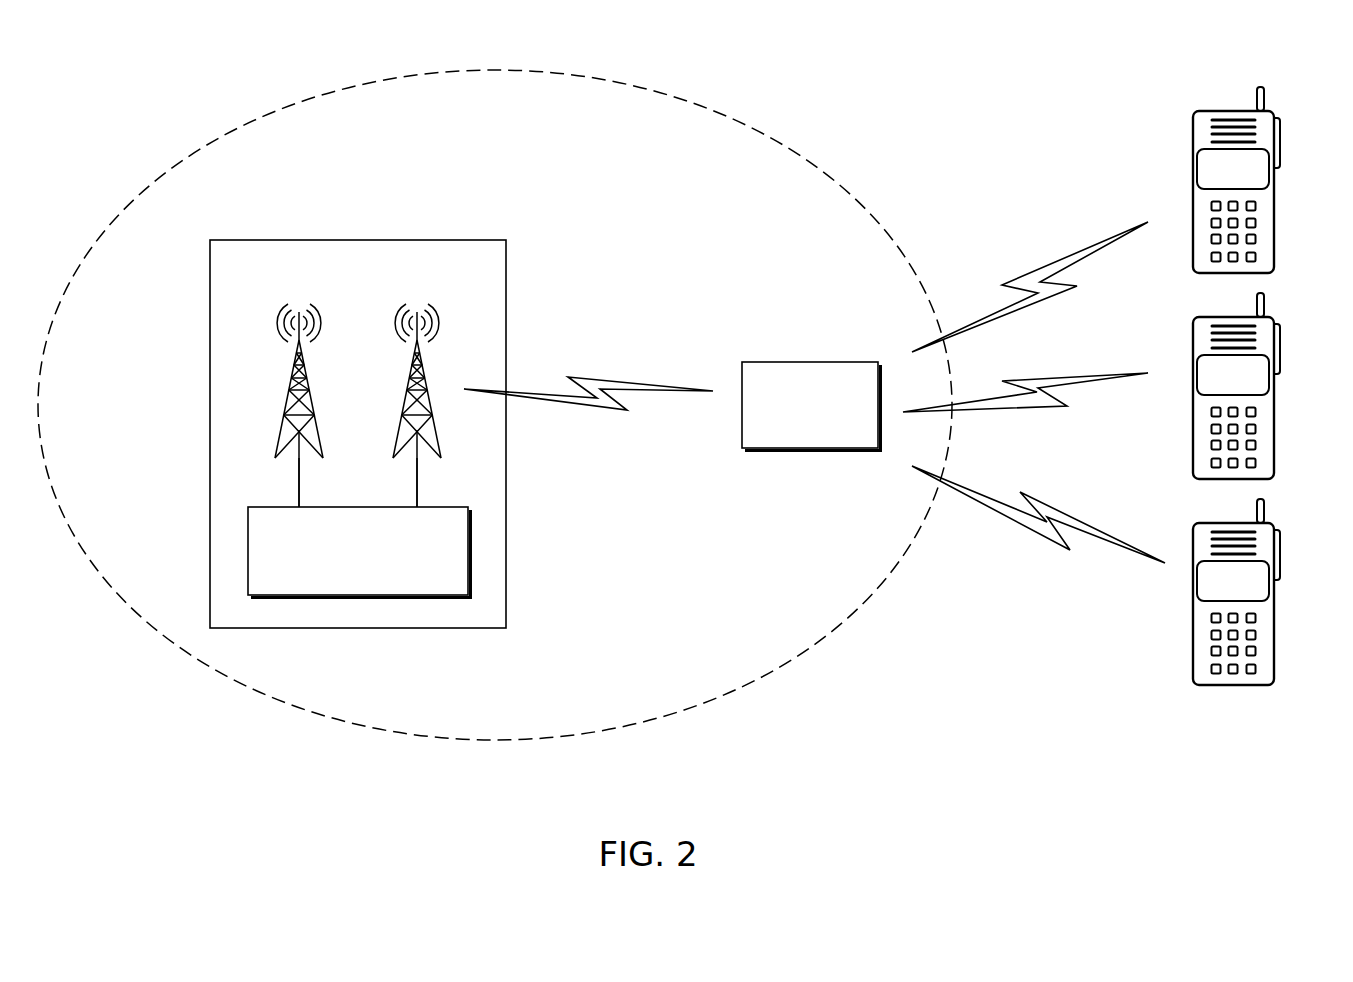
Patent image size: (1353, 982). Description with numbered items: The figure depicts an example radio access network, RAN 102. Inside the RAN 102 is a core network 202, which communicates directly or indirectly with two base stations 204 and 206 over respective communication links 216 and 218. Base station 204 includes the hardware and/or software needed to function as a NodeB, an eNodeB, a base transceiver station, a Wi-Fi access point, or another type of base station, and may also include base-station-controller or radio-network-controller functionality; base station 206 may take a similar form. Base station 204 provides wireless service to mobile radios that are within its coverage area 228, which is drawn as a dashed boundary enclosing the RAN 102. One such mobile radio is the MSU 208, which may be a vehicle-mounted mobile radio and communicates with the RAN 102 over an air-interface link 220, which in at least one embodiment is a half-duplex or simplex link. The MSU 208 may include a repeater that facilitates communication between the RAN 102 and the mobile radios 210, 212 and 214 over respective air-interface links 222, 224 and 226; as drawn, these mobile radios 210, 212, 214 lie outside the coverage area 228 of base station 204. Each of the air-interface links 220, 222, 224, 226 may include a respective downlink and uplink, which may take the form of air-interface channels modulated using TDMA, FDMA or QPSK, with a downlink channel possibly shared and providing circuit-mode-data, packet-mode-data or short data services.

The radio access network 102 is at (358, 240).
The core network 202 is at (377, 578).
The base station 204 is at (417, 310).
The base station 206 is at (299, 310).
The MSU 208 is at (829, 431).
The mobile radio 210 is at (1275, 230).
The mobile radio 212 is at (1275, 436).
The mobile radio 214 is at (1274, 642).
The communication link 216 is at (418, 475).
The communication link 218 is at (300, 475).
The air-interface link 220 is at (640, 380).
The air-interface link 222 is at (1075, 252).
The air-interface link 224 is at (1077, 375).
The air-interface link 226 is at (1090, 526).
The coverage area 228 is at (792, 150).